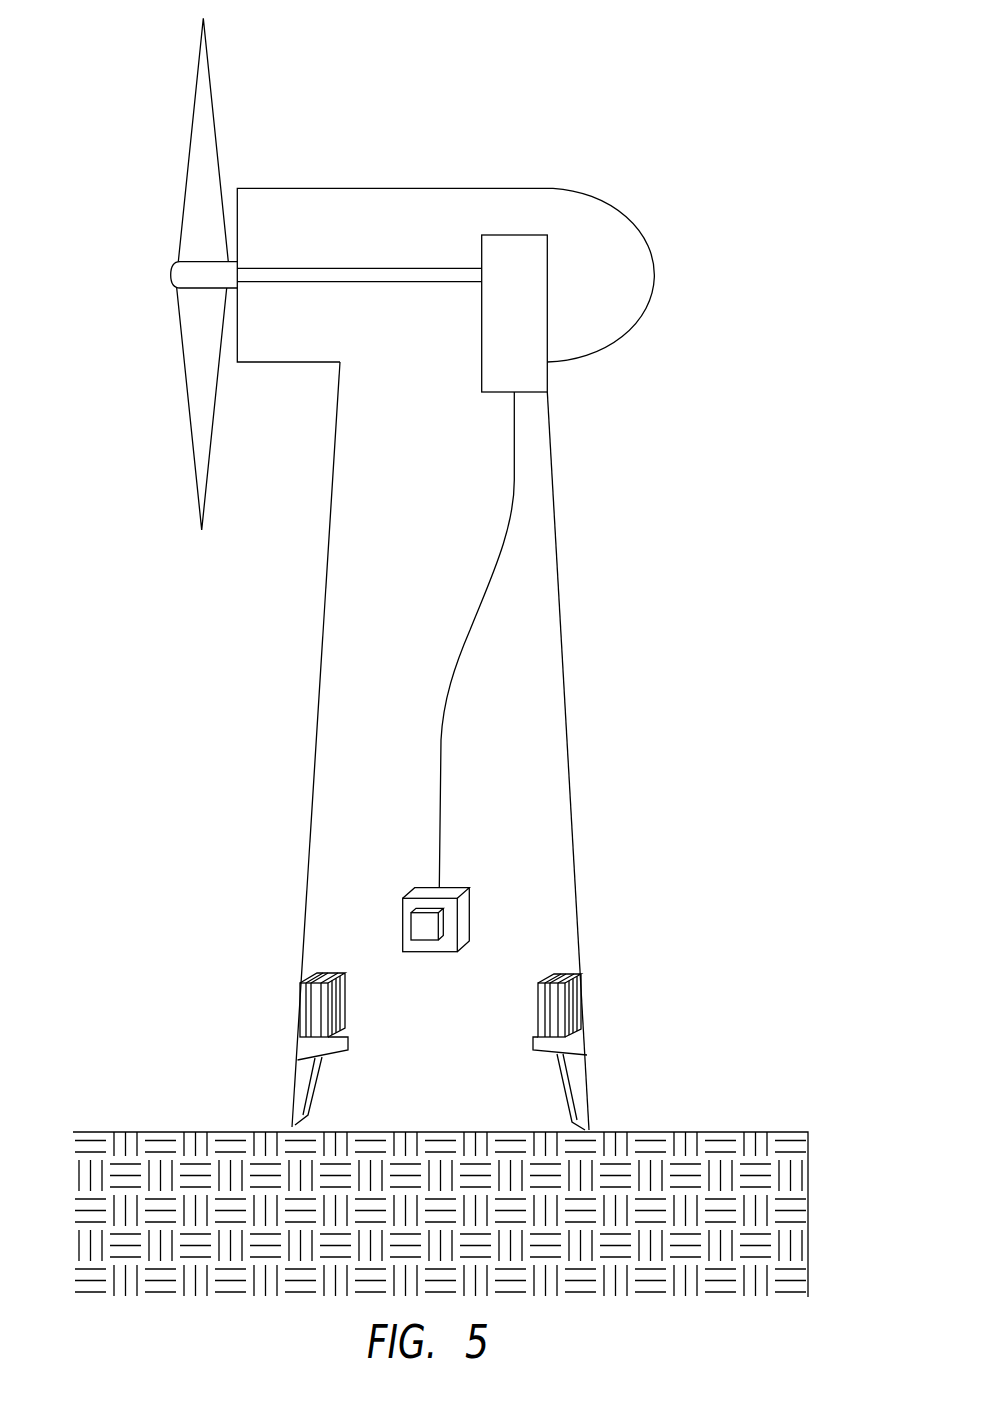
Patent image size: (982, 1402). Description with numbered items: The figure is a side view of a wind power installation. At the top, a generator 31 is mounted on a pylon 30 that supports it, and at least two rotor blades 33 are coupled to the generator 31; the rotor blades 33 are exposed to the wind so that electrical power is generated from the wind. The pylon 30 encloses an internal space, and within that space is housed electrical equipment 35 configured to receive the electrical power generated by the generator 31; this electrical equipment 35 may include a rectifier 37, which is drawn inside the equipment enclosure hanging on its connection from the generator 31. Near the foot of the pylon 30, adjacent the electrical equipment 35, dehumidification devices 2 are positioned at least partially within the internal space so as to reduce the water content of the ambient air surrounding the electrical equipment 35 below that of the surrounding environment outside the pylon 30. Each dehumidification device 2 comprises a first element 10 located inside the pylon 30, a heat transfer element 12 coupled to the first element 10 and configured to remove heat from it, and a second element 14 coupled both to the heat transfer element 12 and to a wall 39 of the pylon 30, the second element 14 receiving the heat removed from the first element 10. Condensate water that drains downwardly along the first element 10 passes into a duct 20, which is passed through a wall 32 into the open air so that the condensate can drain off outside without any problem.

The dehumidification device 2 is at (427, 995).
The first element 10 is at (427, 1005).
The heat transfer element 12 is at (313, 995).
The second element 14 is at (327, 1007).
The duct 20 is at (318, 1087).
The pylon 30 is at (381, 574).
The generator 31 is at (499, 334).
The wall 32 is at (445, 746).
The rotor blades 33 is at (188, 407).
The electrical equipment 35 is at (436, 876).
The rectifier 37 is at (424, 925).
The wall of the pylon 39 is at (568, 748).